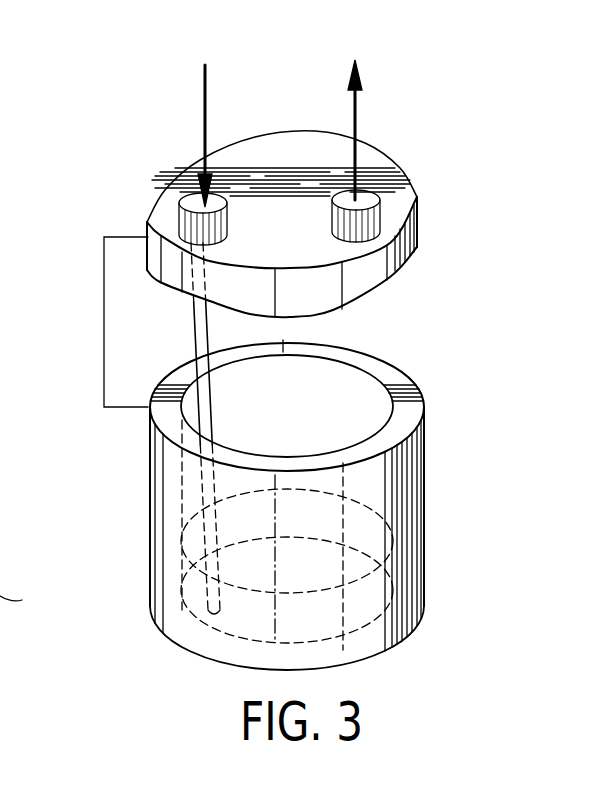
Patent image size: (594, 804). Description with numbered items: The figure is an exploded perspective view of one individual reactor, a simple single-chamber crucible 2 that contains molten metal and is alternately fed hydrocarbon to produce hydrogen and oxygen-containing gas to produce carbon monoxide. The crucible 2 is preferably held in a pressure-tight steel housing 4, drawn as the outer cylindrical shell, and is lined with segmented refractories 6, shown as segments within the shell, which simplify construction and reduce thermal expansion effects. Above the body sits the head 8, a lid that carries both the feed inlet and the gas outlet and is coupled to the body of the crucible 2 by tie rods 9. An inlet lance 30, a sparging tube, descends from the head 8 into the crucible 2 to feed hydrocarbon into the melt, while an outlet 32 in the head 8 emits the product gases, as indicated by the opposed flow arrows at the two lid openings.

The crucible 2 is at (441, 467).
The pressure-tight steel housing 4 is at (427, 553).
The segmented refractories 6 is at (309, 346).
The head 8 is at (417, 240).
The tie rods 9 is at (103, 338).
The inlet lance 30 is at (197, 333).
The outlet 32 is at (357, 117).